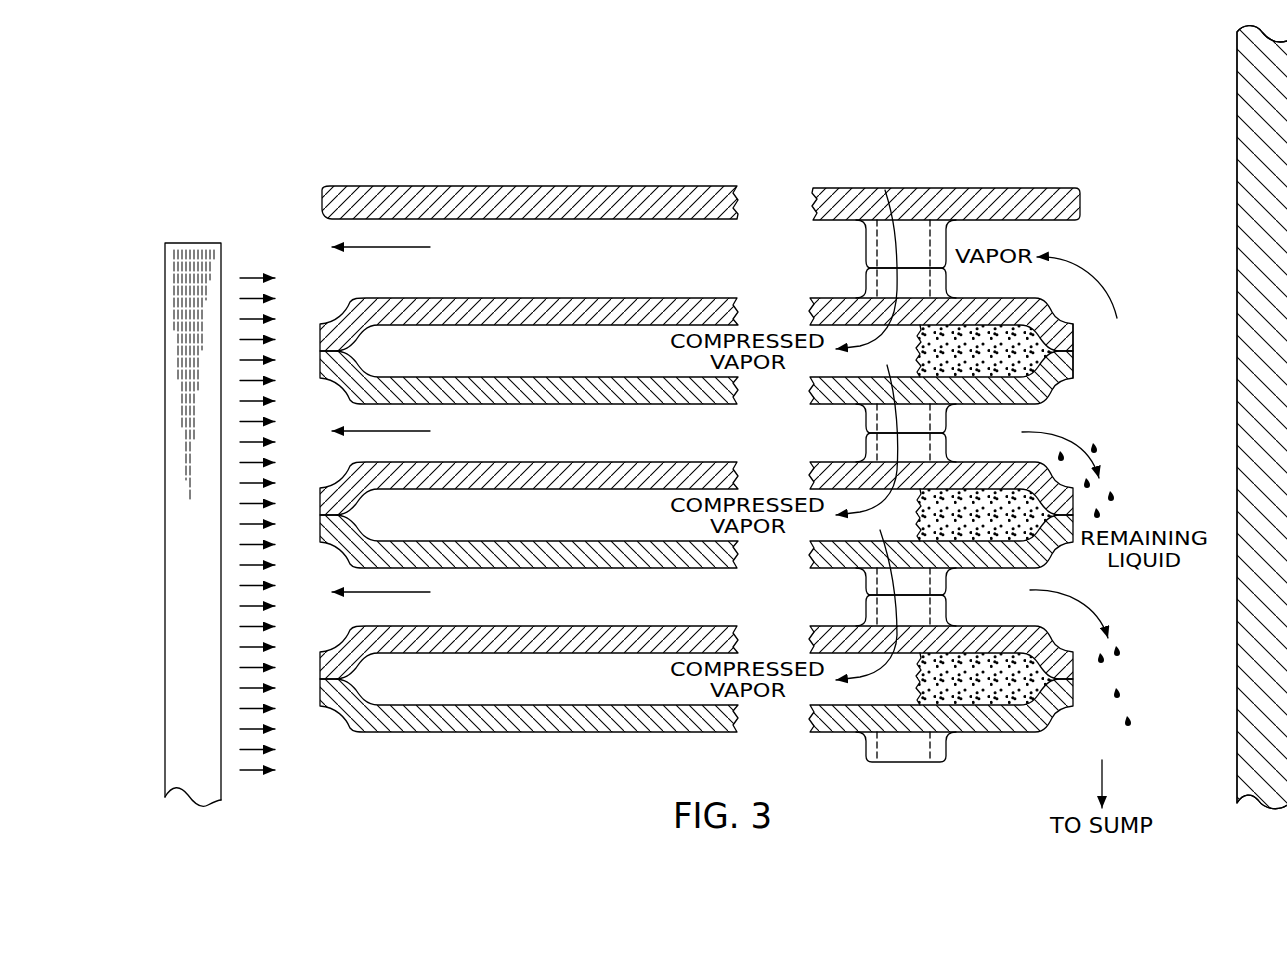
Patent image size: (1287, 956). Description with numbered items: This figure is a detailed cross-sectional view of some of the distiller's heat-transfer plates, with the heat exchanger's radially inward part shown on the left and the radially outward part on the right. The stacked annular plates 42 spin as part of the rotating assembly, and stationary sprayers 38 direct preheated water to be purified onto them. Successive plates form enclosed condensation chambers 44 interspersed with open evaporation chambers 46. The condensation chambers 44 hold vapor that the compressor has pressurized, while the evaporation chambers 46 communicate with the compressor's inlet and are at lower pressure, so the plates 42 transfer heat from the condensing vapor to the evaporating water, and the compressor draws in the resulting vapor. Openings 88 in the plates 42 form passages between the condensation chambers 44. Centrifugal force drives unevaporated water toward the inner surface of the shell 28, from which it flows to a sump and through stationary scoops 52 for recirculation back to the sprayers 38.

The shell 28 is at (1237, 219).
The sprayers 38 is at (203, 494).
The plates 42 is at (302, 262).
The condensation chambers 44 is at (643, 365).
The evaporation chambers 46 is at (583, 275).
The scoops 52 is at (1076, 330).
The openings 88 is at (885, 183).